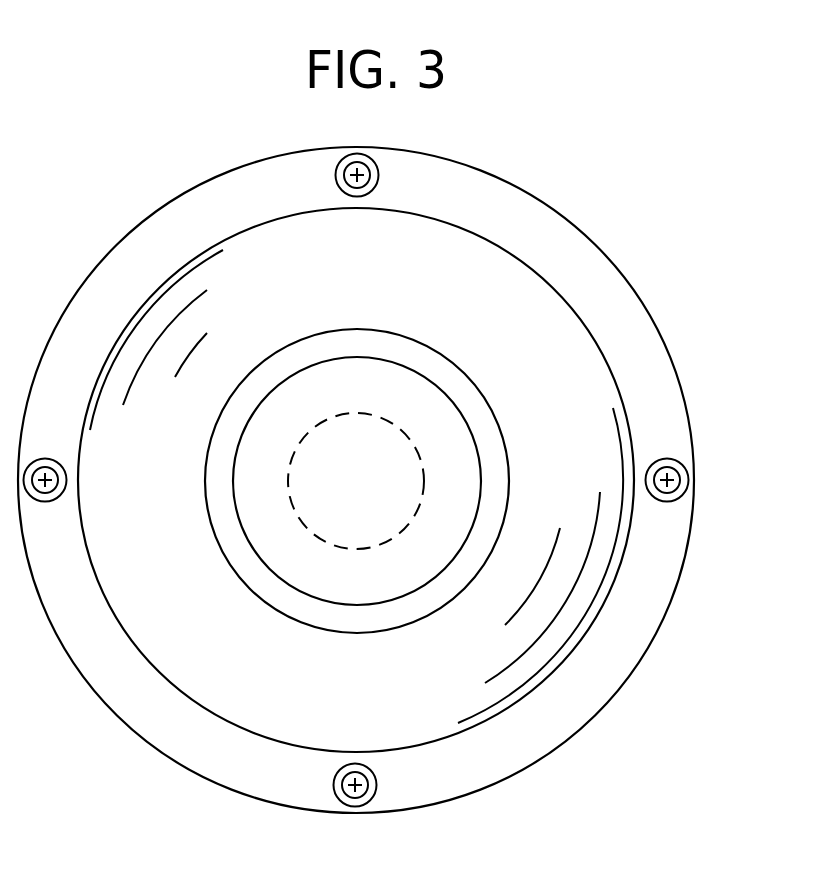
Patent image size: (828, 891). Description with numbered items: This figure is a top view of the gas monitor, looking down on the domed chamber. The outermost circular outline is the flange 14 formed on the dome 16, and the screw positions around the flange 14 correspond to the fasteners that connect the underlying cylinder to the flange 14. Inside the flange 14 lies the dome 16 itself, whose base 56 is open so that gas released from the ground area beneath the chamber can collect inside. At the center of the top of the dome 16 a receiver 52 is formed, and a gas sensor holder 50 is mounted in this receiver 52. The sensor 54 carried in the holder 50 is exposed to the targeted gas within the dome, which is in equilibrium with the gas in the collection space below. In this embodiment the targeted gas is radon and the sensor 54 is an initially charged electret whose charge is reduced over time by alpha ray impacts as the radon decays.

The flange 14 is at (568, 250).
The dome 16 is at (553, 350).
The gas sensor holder 50 is at (328, 575).
The receiver 52 is at (470, 380).
The sensor 54 is at (372, 417).
The base 56 is at (147, 650).